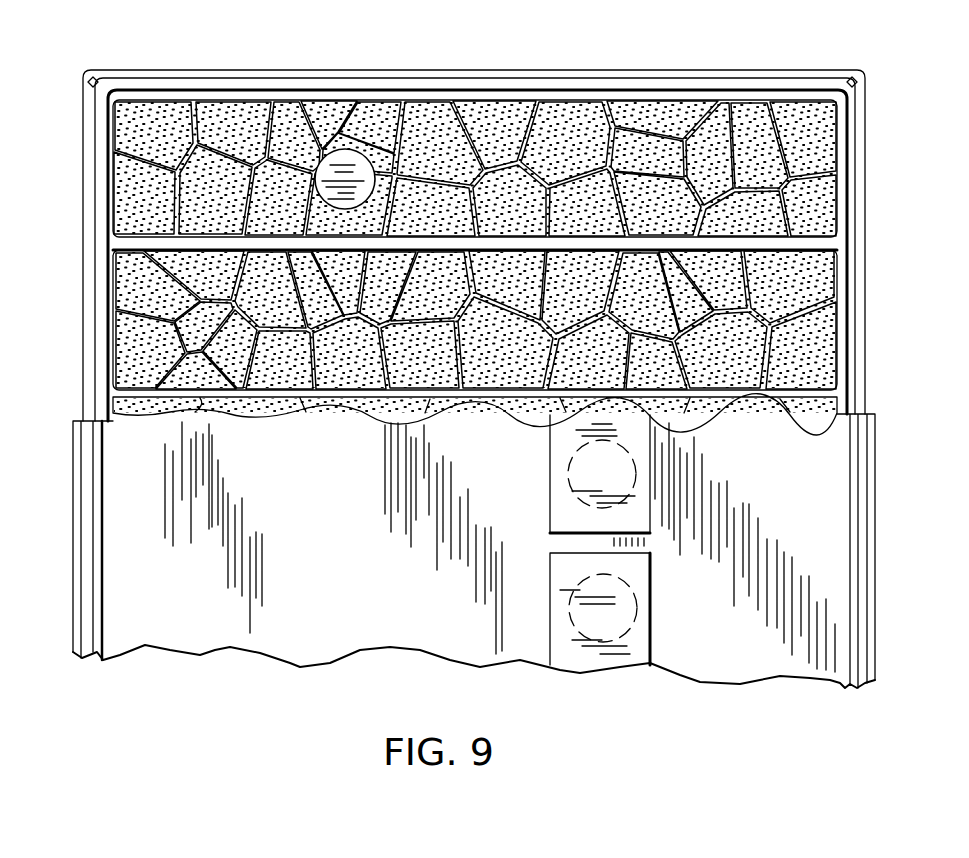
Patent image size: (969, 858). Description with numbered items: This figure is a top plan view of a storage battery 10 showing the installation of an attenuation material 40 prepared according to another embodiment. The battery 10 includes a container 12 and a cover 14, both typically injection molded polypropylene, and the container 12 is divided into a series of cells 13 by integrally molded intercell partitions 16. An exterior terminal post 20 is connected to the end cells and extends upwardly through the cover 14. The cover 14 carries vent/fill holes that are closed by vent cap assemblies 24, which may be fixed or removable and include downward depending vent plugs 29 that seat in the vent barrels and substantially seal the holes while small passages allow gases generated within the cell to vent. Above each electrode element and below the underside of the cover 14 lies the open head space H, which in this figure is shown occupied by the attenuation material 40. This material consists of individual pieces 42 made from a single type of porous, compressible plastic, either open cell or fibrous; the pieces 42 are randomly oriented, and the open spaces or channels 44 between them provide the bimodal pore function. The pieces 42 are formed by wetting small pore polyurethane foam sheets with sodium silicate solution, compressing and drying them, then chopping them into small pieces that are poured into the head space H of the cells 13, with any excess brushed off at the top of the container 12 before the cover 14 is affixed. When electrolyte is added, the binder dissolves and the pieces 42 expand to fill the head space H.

The storage battery 10 is at (216, 606).
The container 12 is at (296, 70).
The cells 13 is at (115, 150).
The cover 14 is at (330, 534).
The intercell partitions 16 is at (165, 242).
The terminal post 20 is at (345, 152).
The vent cap assemblies 24 is at (563, 563).
The vent plugs 29 is at (570, 455).
The attenuation material 40 is at (612, 122).
The pieces 42 is at (533, 145).
The open spaces or channels 44 is at (240, 123).
The head space H is at (746, 122).